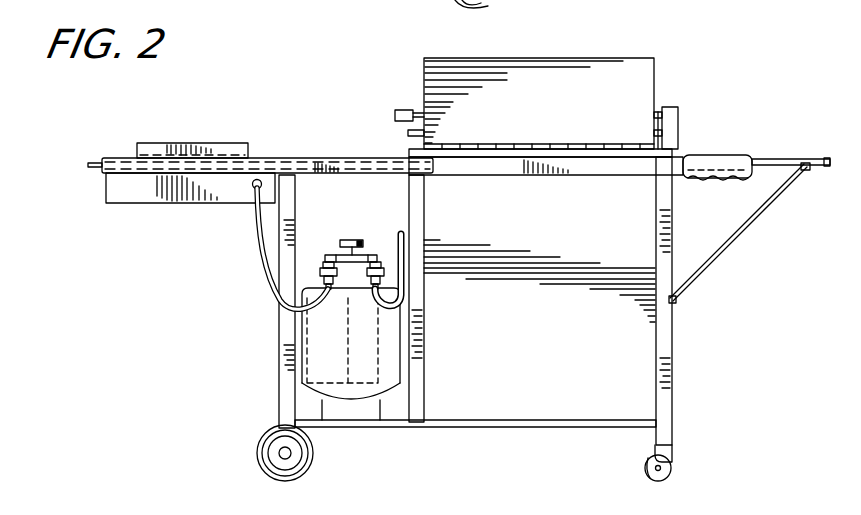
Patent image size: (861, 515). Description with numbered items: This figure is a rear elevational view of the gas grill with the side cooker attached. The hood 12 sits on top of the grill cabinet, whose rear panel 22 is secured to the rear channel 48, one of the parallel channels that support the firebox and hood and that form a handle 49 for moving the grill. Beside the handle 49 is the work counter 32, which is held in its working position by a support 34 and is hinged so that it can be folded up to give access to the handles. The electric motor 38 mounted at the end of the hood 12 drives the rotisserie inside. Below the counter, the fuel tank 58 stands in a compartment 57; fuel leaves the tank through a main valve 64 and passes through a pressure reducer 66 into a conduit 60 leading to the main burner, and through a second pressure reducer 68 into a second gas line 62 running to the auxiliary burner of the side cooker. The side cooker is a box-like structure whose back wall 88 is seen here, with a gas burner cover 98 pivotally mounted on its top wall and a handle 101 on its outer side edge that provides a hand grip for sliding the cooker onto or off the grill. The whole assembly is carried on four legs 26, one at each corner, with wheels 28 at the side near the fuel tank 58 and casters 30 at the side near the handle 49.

The hood 12 is at (577, 72).
The rear panel 22 is at (642, 373).
The legs 26 is at (280, 378).
The wheels 28 is at (264, 438).
The casters 30 is at (668, 456).
The work counter 32 is at (796, 160).
The support 34 is at (741, 234).
The electric motor 38 is at (672, 118).
The rear channel 48 is at (578, 168).
The handle 49 is at (738, 165).
The compartment 57 is at (354, 201).
The fuel tank 58 is at (362, 392).
The conduit 60 is at (398, 286).
The second gas line 62 is at (272, 278).
The main valve 64 is at (352, 263).
The pressure reducer 66 is at (376, 262).
The second pressure reducer 68 is at (325, 262).
The back wall 88 is at (150, 200).
The gas burner cover 98 is at (233, 143).
The handle 101 is at (92, 168).